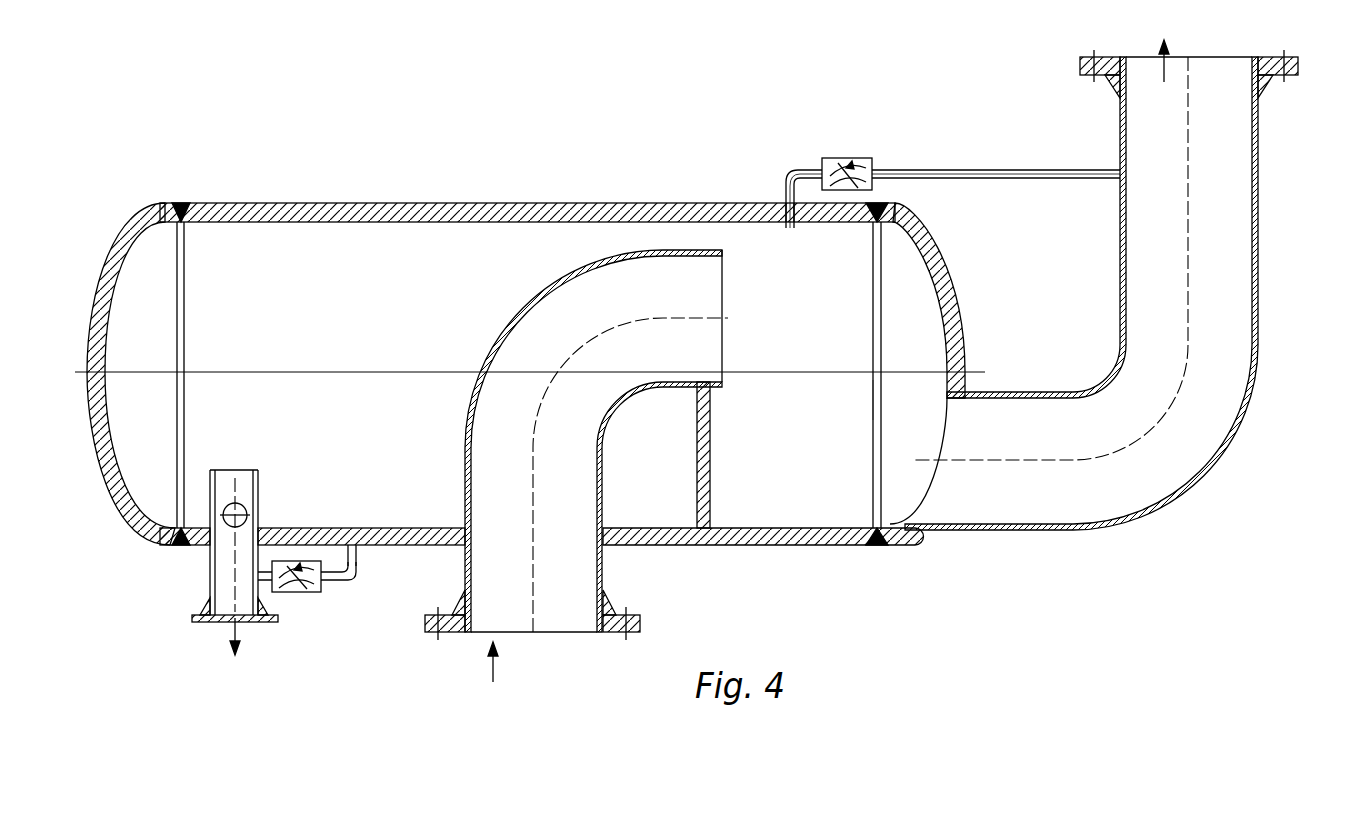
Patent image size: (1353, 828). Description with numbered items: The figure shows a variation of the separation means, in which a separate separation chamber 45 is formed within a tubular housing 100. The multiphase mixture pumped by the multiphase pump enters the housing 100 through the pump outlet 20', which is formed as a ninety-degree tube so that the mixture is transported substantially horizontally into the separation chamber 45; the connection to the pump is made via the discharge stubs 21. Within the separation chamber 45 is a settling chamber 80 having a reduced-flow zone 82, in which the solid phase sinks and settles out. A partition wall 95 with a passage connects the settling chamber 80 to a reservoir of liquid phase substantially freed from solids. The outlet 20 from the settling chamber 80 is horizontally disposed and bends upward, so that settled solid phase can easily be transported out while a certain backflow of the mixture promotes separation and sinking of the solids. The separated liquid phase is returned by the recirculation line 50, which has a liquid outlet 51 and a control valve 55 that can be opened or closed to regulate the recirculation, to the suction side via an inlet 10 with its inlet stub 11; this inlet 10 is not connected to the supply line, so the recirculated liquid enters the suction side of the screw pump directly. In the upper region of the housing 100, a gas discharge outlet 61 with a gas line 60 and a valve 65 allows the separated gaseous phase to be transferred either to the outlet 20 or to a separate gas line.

The tubular housing 100 is at (385, 205).
The separation chamber 45 is at (530, 153).
The settling chamber 80 is at (830, 497).
The reduced-flow zone 82 is at (822, 400).
The partition wall 95 is at (710, 500).
The pump outlet 20' is at (596, 468).
The outlet stubs 21 is at (452, 633).
The outlet 20 is at (1109, 285).
The inlet 10 is at (218, 578).
The inlet stub 11 is at (205, 625).
The recirculation line 50 is at (222, 517).
The liquid outlet 51 is at (355, 527).
The control valve 55 is at (297, 592).
The gas line 60 is at (786, 181).
The gas discharge outlet 61 is at (788, 229).
The valve 65 is at (834, 158).